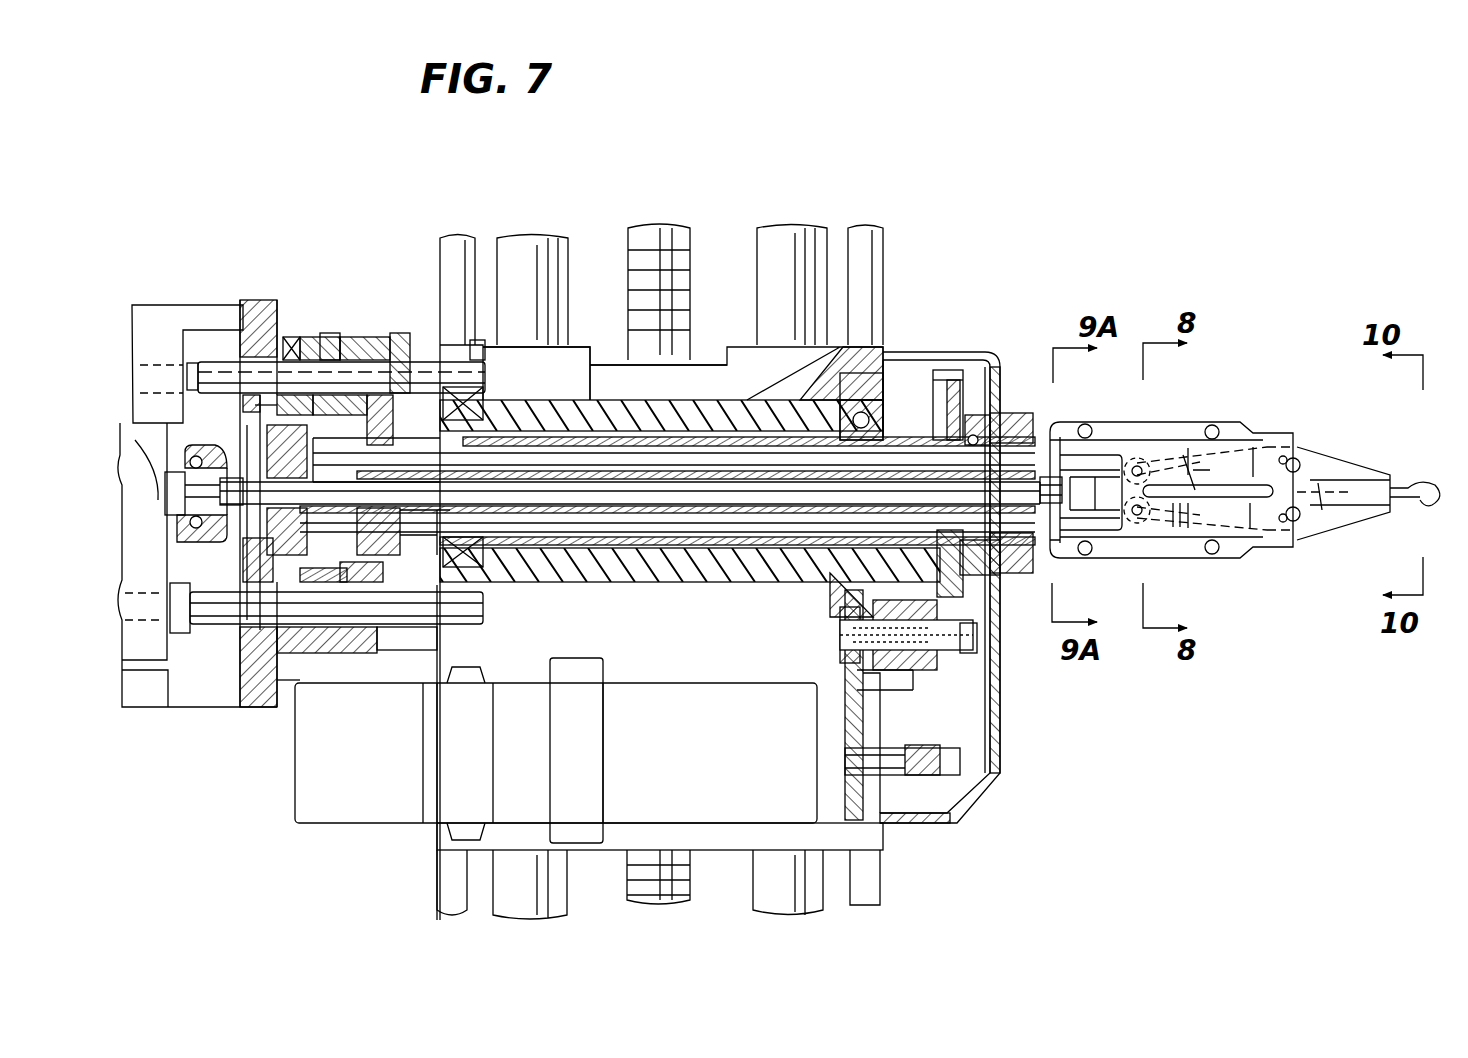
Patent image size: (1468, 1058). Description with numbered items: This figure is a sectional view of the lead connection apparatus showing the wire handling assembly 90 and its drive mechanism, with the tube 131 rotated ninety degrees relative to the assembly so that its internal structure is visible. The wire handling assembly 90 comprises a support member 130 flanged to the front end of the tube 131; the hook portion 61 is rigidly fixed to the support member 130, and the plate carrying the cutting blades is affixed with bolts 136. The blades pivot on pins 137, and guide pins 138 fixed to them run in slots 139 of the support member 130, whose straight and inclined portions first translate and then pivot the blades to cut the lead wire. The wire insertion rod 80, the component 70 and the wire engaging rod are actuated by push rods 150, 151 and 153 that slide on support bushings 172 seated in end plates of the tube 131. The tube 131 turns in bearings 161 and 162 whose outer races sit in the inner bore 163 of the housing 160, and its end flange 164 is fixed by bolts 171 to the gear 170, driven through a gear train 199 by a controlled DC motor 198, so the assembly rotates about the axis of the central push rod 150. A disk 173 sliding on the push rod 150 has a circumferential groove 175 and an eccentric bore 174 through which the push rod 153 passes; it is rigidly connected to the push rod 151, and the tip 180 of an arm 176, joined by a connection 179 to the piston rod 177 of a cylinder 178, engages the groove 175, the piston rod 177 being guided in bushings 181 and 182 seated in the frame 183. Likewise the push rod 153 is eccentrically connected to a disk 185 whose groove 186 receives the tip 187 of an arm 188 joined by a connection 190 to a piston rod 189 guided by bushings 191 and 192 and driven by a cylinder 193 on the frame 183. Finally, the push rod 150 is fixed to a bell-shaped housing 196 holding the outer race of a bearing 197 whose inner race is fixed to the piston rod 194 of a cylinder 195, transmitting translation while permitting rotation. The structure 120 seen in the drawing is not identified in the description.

The hook portion 61 is at (1422, 510).
The wire handling assembly component 70 is at (1352, 463).
The wire insertion rod 80 is at (1320, 507).
The wire handling assembly 90 is at (1231, 422).
The housing 120 is at (993, 745).
The support member 130 is at (1042, 399).
The tube 131 is at (918, 440).
The bolts 136 is at (1100, 416).
The pins 137 is at (1298, 470).
The guide pins 138 is at (1140, 483).
The slots 139 is at (1183, 455).
The push rod 150 is at (632, 497).
The second push rod 151 is at (710, 527).
The third push rod 153 is at (660, 440).
The housing 160 is at (860, 352).
The bearing 161 is at (840, 430).
The bearing 162 is at (512, 415).
The inner bore 163 is at (710, 400).
The end flange 164 is at (992, 586).
The gear 170 is at (985, 595).
The bolts 171 is at (1000, 420).
The support bushings 172 is at (972, 412).
The disk 173 is at (410, 444).
The eccentrically located bore 174 is at (345, 427).
The circumferential groove 175 is at (388, 540).
The arm 176 is at (355, 337).
The piston rod 177 is at (218, 360).
The cylinder 178 is at (160, 340).
The conventional connection 179 is at (300, 337).
The tip 180 is at (400, 365).
The bushing 181 is at (257, 350).
The bushing 182 is at (484, 358).
The frame 183 is at (177, 308).
The disk 185 is at (298, 522).
The groove 186 is at (255, 412).
The tip 187 is at (296, 549).
The arm 188 is at (328, 640).
The piston rod 189 is at (220, 617).
The conventional connection 190 is at (378, 632).
The bushing 191 is at (237, 627).
The bushing 192 is at (482, 625).
The cylinder 193 is at (143, 665).
The piston rod 194 is at (227, 537).
The cylinder 195 is at (170, 622).
The bell-shaped housing 196 is at (178, 452).
The bearing 197 is at (175, 532).
The DC motor 198 is at (705, 805).
The gear train 199 is at (933, 772).